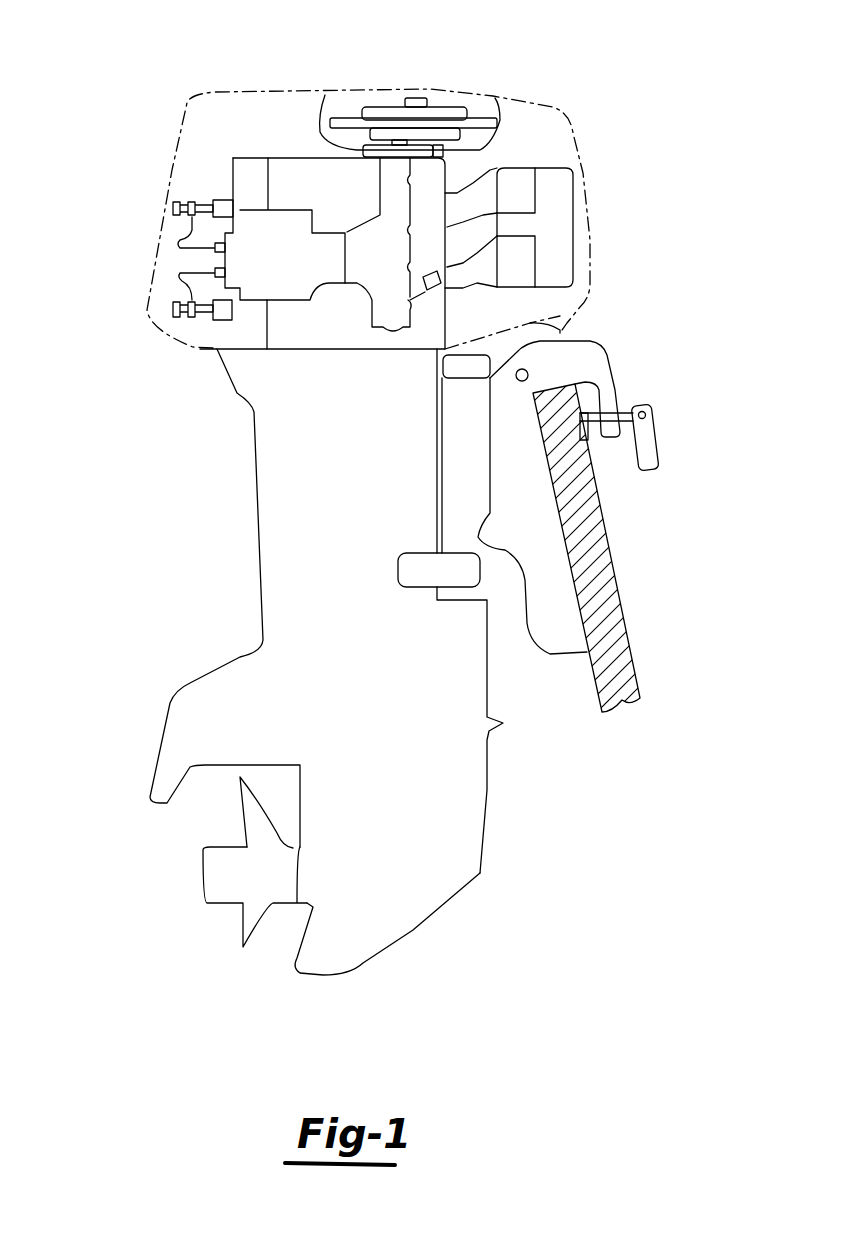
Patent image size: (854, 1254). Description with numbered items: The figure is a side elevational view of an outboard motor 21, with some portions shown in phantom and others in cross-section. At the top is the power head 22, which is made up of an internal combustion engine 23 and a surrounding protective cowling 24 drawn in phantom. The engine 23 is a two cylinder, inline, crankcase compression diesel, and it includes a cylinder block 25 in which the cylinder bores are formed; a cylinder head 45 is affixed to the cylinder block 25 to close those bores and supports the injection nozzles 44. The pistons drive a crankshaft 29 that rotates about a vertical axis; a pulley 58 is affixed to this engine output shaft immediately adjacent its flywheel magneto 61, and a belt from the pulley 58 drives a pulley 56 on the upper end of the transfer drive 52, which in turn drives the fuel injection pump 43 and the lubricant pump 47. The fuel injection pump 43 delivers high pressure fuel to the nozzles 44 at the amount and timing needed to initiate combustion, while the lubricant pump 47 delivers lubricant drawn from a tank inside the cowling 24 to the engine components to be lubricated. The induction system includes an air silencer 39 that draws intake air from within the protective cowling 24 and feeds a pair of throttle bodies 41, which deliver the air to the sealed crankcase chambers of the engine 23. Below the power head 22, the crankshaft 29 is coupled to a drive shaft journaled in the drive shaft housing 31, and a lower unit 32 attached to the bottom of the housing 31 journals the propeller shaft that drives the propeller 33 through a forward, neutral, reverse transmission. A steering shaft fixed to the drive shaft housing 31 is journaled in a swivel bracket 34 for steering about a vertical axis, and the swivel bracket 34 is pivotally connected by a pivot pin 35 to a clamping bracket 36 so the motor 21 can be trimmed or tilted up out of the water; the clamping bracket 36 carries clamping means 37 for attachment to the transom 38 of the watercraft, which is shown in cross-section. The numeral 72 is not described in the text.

The outboard motor 21 is at (447, 494).
The power head 22 is at (315, 219).
The internal combustion engine 23 is at (277, 168).
The protective cowling 24 is at (163, 214).
The cylinder block 25 is at (282, 209).
The crankshaft 29 is at (430, 100).
The drive shaft housing 31 is at (267, 475).
The lower unit 32 is at (487, 793).
The propeller 33 is at (245, 818).
The swivel bracket 34 is at (470, 493).
The pivot pin 35 is at (560, 320).
The clamping bracket 36 is at (597, 353).
The clamping means 37 is at (650, 433).
The transom 38 is at (603, 547).
The air silencer 39 is at (560, 185).
The throttle bodies 41 is at (527, 168).
The fuel injection pump 43 is at (284, 287).
The injection nozzles 44 is at (220, 207).
The cylinder head 45 is at (227, 210).
The lubricant pump 47 is at (427, 303).
The transfer drive 52 is at (367, 230).
The pulley 56 is at (325, 95).
The pulley 58 is at (483, 193).
The flywheel magneto 61 is at (370, 108).
The air inlet 72 is at (520, 177).